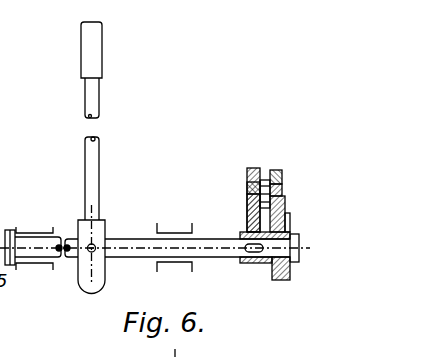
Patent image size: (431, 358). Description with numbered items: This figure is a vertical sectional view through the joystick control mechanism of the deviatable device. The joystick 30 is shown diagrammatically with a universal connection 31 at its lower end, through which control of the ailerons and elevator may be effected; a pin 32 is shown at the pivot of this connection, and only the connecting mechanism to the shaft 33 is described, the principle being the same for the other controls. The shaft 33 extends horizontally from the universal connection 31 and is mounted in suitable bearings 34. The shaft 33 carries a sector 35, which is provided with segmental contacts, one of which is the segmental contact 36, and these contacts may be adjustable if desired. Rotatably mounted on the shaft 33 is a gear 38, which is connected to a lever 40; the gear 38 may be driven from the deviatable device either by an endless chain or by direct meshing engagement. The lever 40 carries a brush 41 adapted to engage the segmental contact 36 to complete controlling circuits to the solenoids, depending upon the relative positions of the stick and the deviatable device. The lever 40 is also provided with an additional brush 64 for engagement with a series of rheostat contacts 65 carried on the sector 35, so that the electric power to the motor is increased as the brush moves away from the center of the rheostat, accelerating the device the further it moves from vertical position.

The joystick 30 is at (93, 68).
The universal connection 31 is at (98, 231).
The pivot pin 32 is at (94, 253).
The shaft 33 is at (200, 253).
The bearings 34 is at (33, 231).
The sector 35 is at (248, 172).
The segmental contact 36 is at (262, 187).
The gear 38 is at (291, 218).
The lever 40 is at (281, 177).
The brush 41 is at (263, 180).
The additional brush 64 is at (279, 199).
The rheostat contacts 65 is at (249, 201).